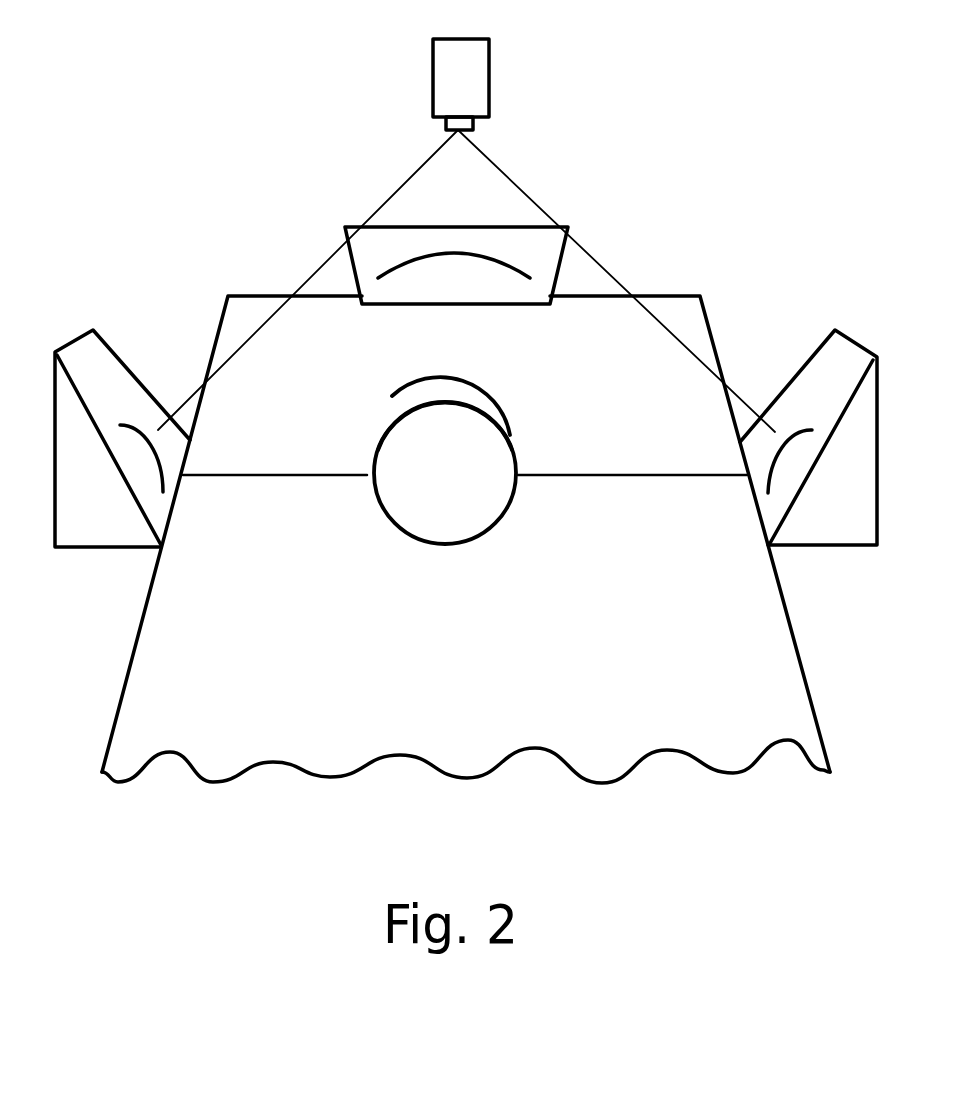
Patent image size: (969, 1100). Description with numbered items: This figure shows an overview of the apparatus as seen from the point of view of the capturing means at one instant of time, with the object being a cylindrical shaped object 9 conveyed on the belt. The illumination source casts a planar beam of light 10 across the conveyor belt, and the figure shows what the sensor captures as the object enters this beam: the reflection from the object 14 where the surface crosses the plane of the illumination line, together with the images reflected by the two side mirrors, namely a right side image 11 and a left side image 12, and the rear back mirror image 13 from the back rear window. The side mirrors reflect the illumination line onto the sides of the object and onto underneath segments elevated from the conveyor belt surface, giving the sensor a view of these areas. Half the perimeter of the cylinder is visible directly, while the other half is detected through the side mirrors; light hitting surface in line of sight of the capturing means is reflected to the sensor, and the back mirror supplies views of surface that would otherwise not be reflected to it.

The cylindrical shaped object 9 is at (475, 518).
The planar beam of light 10 is at (527, 187).
The right side image 11 is at (783, 452).
The left side image 12 is at (143, 452).
The rear back mirror image 13 is at (397, 260).
The reflection from the object 14 is at (477, 382).